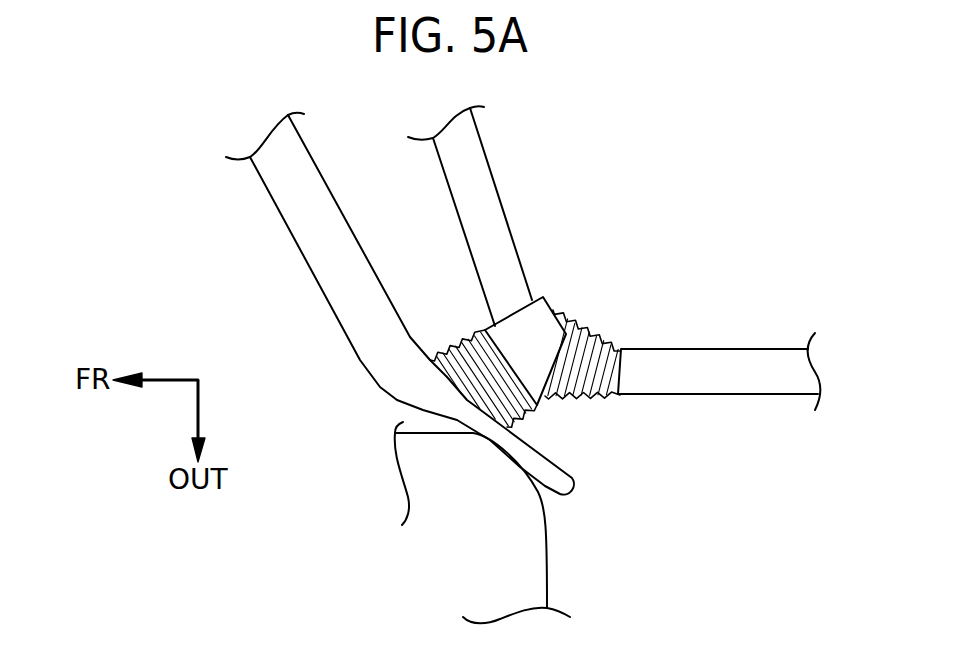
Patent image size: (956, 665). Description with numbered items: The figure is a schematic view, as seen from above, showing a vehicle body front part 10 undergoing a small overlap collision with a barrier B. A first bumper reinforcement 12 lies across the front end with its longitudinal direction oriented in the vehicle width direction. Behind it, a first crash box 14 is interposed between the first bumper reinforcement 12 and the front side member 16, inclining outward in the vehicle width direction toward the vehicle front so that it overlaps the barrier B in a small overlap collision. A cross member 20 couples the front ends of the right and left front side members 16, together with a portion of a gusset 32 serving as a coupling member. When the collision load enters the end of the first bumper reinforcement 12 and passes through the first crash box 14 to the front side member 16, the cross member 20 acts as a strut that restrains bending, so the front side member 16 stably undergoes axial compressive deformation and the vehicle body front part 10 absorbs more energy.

The vehicle body front part 10 is at (523, 351).
The first bumper reinforcement 12 is at (305, 237).
The first crash box 14 is at (465, 352).
The front side member 16 is at (750, 395).
The cross member 20 is at (467, 207).
The gusset 32 is at (515, 307).
The barrier B is at (548, 575).